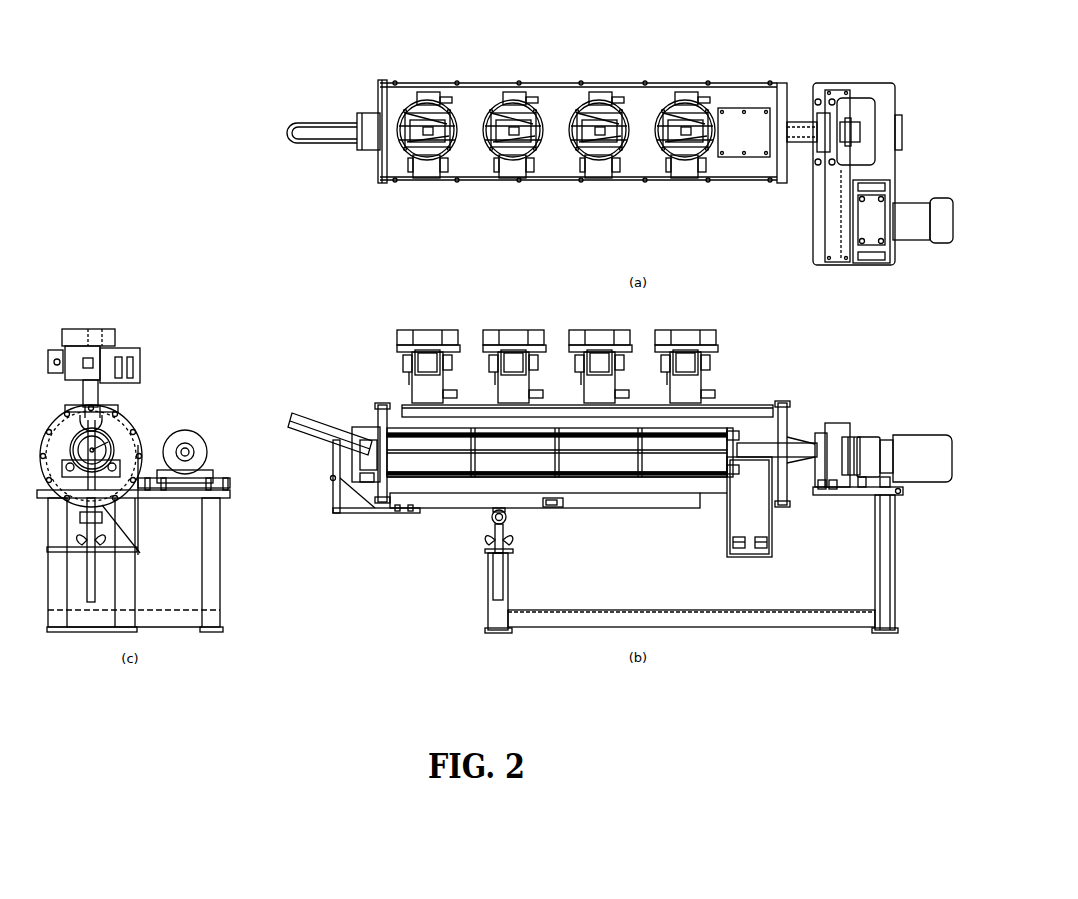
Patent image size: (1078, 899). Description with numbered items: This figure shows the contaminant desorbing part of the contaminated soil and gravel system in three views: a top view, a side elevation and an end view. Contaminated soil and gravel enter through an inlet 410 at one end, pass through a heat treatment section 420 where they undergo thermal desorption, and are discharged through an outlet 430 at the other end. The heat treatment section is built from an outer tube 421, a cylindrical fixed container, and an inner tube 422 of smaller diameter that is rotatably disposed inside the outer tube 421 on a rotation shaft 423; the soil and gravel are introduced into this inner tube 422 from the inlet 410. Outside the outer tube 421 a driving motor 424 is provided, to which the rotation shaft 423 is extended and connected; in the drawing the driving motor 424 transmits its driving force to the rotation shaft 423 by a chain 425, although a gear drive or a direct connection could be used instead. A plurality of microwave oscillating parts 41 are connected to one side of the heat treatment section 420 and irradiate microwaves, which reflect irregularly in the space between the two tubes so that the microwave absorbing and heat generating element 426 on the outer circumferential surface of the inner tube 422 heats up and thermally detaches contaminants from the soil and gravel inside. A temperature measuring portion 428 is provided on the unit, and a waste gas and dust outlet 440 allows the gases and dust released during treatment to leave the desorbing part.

The microwave oscillating part 41 is at (422, 147).
The inlet 410 is at (317, 135).
The heat treatment section 420 is at (483, 80).
The outer tube 421 is at (462, 496).
The inner tube 422 is at (447, 476).
The rotation shaft 423 is at (802, 138).
The driving motor 424 is at (940, 240).
The chain 425 is at (893, 176).
The microwave absorbing and heat generating element 426 is at (610, 476).
The temperature measuring portion 428 is at (400, 496).
The outlet 430 is at (773, 525).
The waste gas and dust outlet 440 is at (734, 148).